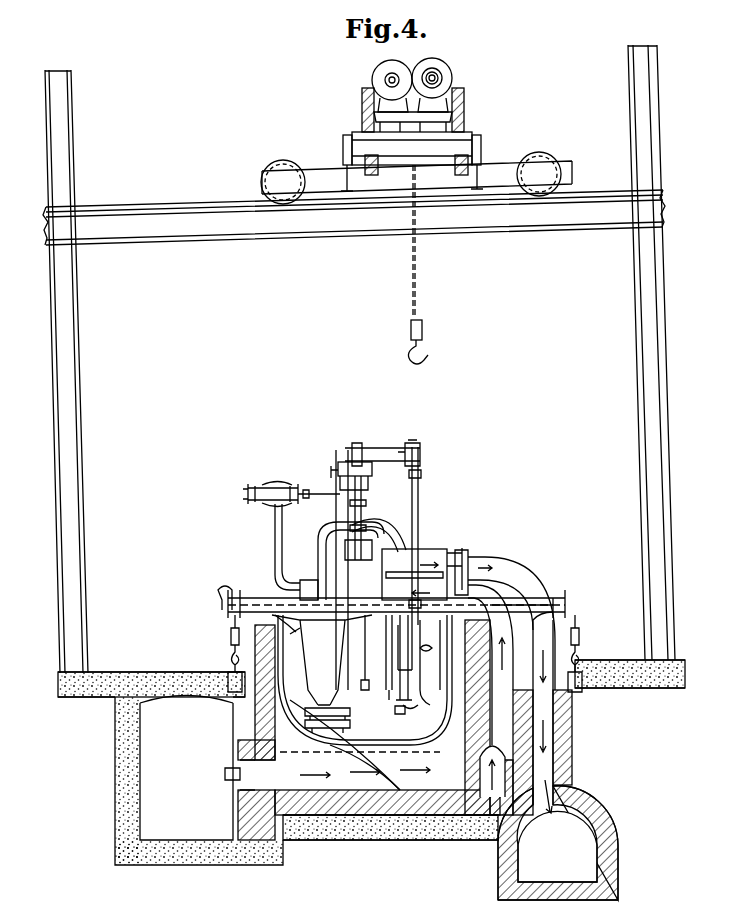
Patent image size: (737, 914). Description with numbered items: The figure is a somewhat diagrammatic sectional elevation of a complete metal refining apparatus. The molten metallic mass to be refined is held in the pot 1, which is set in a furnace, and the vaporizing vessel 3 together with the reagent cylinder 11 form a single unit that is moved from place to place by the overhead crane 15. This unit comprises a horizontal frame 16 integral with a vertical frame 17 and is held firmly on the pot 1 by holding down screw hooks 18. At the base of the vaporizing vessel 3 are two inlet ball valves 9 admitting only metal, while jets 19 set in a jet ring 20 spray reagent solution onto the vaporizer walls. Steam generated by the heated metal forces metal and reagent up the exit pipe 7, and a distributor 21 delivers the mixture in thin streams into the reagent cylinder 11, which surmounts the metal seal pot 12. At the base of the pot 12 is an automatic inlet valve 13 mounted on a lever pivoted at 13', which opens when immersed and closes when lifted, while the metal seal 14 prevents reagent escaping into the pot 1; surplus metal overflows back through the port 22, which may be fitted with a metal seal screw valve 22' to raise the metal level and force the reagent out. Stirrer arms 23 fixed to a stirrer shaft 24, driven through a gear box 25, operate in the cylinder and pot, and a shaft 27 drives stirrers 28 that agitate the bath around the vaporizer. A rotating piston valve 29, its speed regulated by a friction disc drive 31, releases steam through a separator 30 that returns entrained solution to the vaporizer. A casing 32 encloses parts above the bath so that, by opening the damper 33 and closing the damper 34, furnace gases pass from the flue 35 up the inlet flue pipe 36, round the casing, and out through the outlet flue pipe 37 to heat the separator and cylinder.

The pot 1 is at (378, 712).
The vaporizing vessel 3 is at (290, 640).
The exit pipe 7 is at (330, 632).
The inlet ball valves 9 is at (310, 710).
The reagent cylinder 11 is at (457, 559).
The metal seal pot 12 is at (428, 680).
The automatic inlet valve 13 is at (394, 721).
The pivot 13' is at (403, 720).
The metal seal 14 is at (404, 676).
The crane 15 is at (416, 211).
The horizontal frame 16 is at (245, 598).
The vertical frame 17 is at (340, 470).
The holding down screw hooks 18 is at (232, 642).
The jets 19 is at (290, 600).
The jet ring 20 is at (275, 580).
The distributor 21 is at (405, 540).
The port 22 is at (365, 657).
The metal seal screw valve 22' is at (373, 657).
The stirrer arms 23 is at (425, 647).
The stirrer shaft 24 is at (418, 495).
The gear box 25 is at (408, 443).
The shaft 27 is at (362, 500).
The stirrers 28 is at (359, 659).
The rotating piston valve 29 is at (278, 485).
The separator 30 is at (312, 555).
The friction disc drive 31 is at (338, 496).
The casing 32 is at (466, 555).
The damper 33 is at (548, 600).
The damper 34 is at (558, 760).
The flue 35 is at (492, 771).
The inlet flue pipe 36 is at (520, 590).
The outlet flue pipe 37 is at (504, 575).